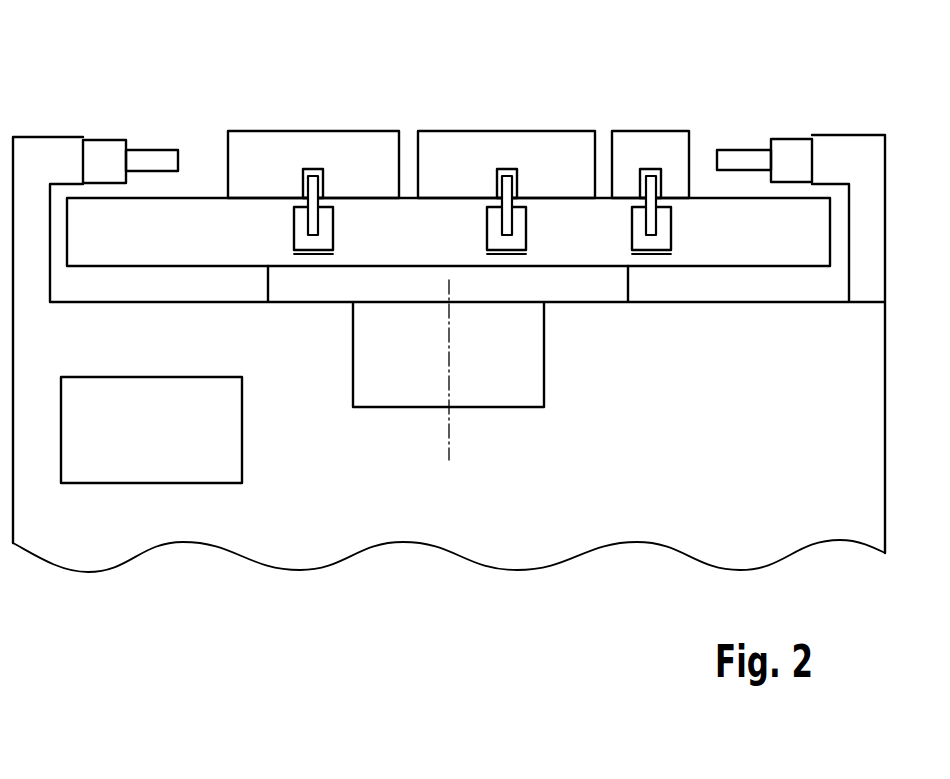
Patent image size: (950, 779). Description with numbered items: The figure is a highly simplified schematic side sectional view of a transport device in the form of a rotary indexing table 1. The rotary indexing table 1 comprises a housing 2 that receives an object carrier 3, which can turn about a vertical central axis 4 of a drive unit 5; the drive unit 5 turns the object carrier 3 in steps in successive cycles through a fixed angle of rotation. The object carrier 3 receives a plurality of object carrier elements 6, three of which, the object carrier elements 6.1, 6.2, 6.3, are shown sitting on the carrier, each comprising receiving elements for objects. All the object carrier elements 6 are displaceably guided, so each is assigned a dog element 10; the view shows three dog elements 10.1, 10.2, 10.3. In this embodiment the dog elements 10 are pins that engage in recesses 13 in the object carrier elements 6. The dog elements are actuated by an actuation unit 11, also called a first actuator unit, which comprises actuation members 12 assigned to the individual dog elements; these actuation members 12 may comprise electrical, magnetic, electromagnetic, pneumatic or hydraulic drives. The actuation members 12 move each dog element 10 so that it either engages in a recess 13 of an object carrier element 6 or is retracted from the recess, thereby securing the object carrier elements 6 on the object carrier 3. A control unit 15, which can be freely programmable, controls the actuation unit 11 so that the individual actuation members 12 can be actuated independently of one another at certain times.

The rotary indexing table 1 is at (679, 90).
The housing 2 is at (885, 422).
The object carrier 3 is at (203, 218).
The vertical central axis 4 is at (449, 442).
The drive unit 5 is at (544, 349).
The object carrier elements 6 is at (443, 106).
The object carrier element 6.1 is at (352, 147).
The object carrier element 6.2 is at (500, 147).
The object carrier element 6.3 is at (632, 148).
The dog elements 10 is at (314, 146).
The dog element 10.1 is at (313, 190).
The dog element 10.2 is at (507, 204).
The dog element 10.3 is at (651, 190).
The actuation unit 11 is at (440, 209).
The actuation members 12 is at (105, 157).
The recesses 13 is at (324, 183).
The control unit 15 is at (242, 425).